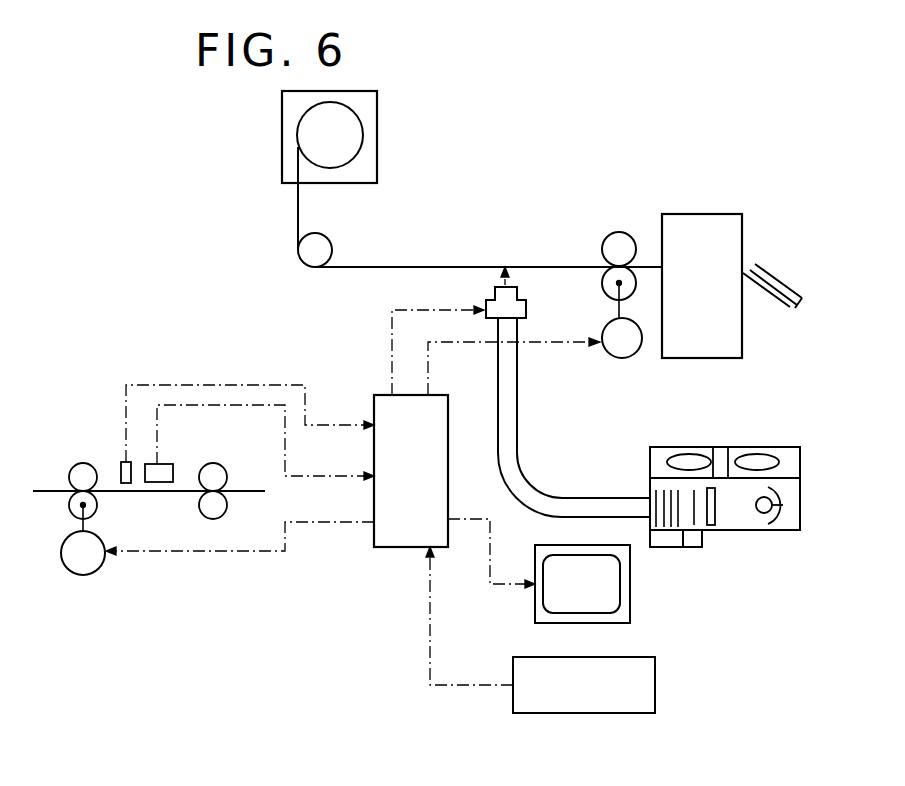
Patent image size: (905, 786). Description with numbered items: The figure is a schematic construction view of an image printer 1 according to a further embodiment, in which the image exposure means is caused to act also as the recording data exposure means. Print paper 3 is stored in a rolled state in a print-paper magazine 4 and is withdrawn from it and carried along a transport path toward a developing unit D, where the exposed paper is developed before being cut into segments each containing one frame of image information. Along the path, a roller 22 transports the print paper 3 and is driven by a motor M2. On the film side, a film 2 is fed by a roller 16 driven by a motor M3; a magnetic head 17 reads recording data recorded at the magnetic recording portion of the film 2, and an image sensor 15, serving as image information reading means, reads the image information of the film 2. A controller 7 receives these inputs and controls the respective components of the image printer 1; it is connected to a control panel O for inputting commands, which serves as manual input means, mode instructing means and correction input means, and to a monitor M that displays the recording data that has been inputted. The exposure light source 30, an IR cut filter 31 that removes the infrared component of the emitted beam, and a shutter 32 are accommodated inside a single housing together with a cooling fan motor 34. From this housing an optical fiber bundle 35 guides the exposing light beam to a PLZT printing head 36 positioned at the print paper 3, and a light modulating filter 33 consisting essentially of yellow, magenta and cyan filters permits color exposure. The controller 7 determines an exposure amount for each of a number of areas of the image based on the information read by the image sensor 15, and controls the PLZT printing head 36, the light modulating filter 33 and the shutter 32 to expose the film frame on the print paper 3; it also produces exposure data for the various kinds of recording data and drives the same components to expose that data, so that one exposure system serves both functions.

The image printer 1 is at (577, 158).
The film 2 is at (135, 492).
The print paper 3 is at (298, 217).
The print-paper magazine 4 is at (377, 126).
The controller 7 is at (374, 549).
The image sensor 15 is at (170, 465).
The roller 16 is at (68, 512).
The magnetic head 17 is at (119, 470).
The roller 22 is at (614, 232).
The exposure light source 30 is at (758, 515).
The IR cut filter 31 is at (716, 520).
The shutter 32 is at (692, 502).
The light modulating filter 33 is at (644, 488).
The cooling fan motor 34 is at (760, 455).
The optical fiber bundle 35 is at (527, 478).
The PLZT printing head 36 is at (492, 293).
The developing unit D is at (713, 214).
The monitor M is at (632, 603).
The motor M2 is at (605, 325).
The motor M3 is at (84, 576).
The control panel O is at (547, 713).